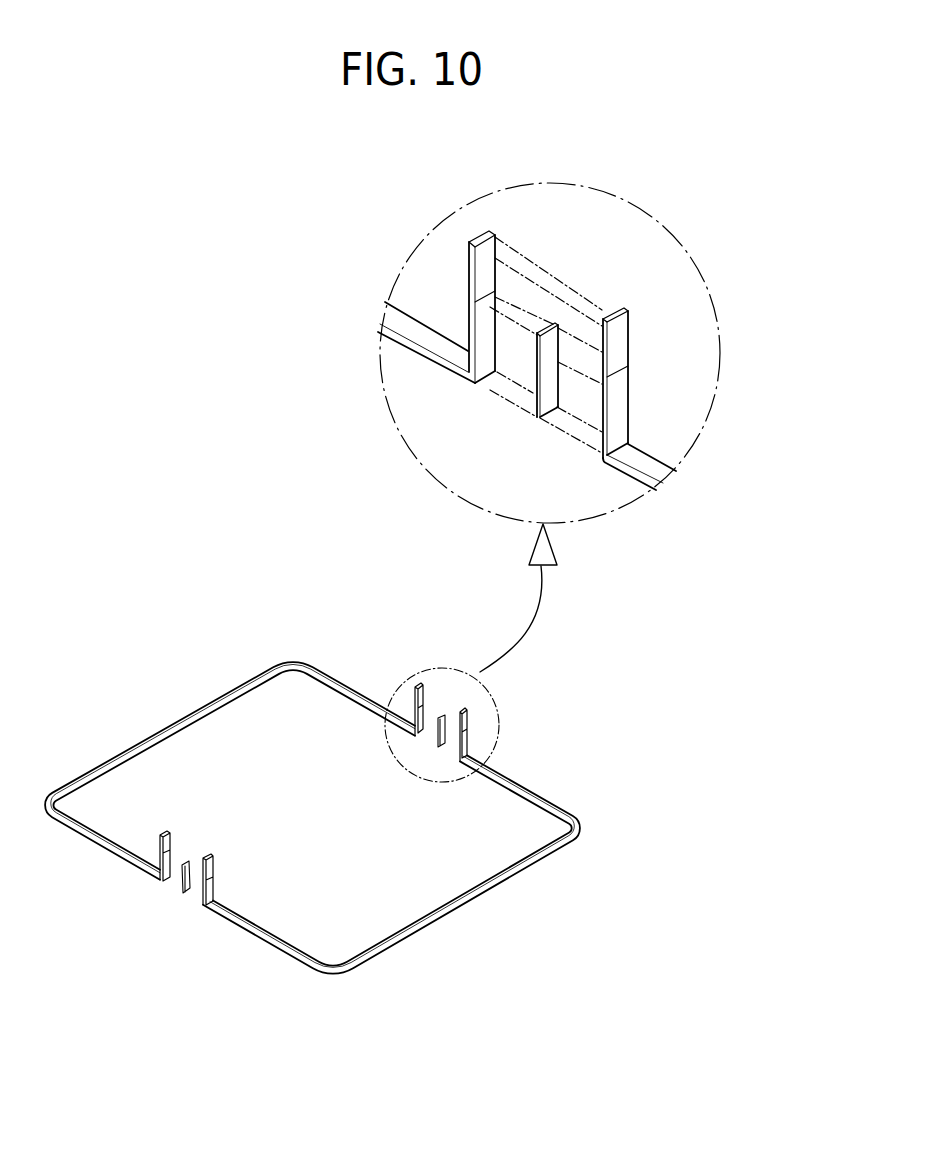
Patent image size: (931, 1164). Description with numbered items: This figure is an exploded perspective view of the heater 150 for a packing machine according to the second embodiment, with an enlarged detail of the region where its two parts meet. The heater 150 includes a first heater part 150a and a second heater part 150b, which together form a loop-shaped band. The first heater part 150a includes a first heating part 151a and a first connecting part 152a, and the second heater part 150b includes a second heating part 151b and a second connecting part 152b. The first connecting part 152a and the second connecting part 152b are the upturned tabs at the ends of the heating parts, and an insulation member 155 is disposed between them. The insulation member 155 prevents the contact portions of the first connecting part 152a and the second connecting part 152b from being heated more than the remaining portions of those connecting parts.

The heater 150 is at (241, 573).
The first heater part 150a is at (176, 705).
The second heater part 150b is at (524, 897).
The first heating part 151a is at (412, 326).
The second heating part 151b is at (658, 467).
The first connecting part 152a is at (457, 301).
The second connecting part 152b is at (623, 385).
The insulation member 155 is at (532, 410).